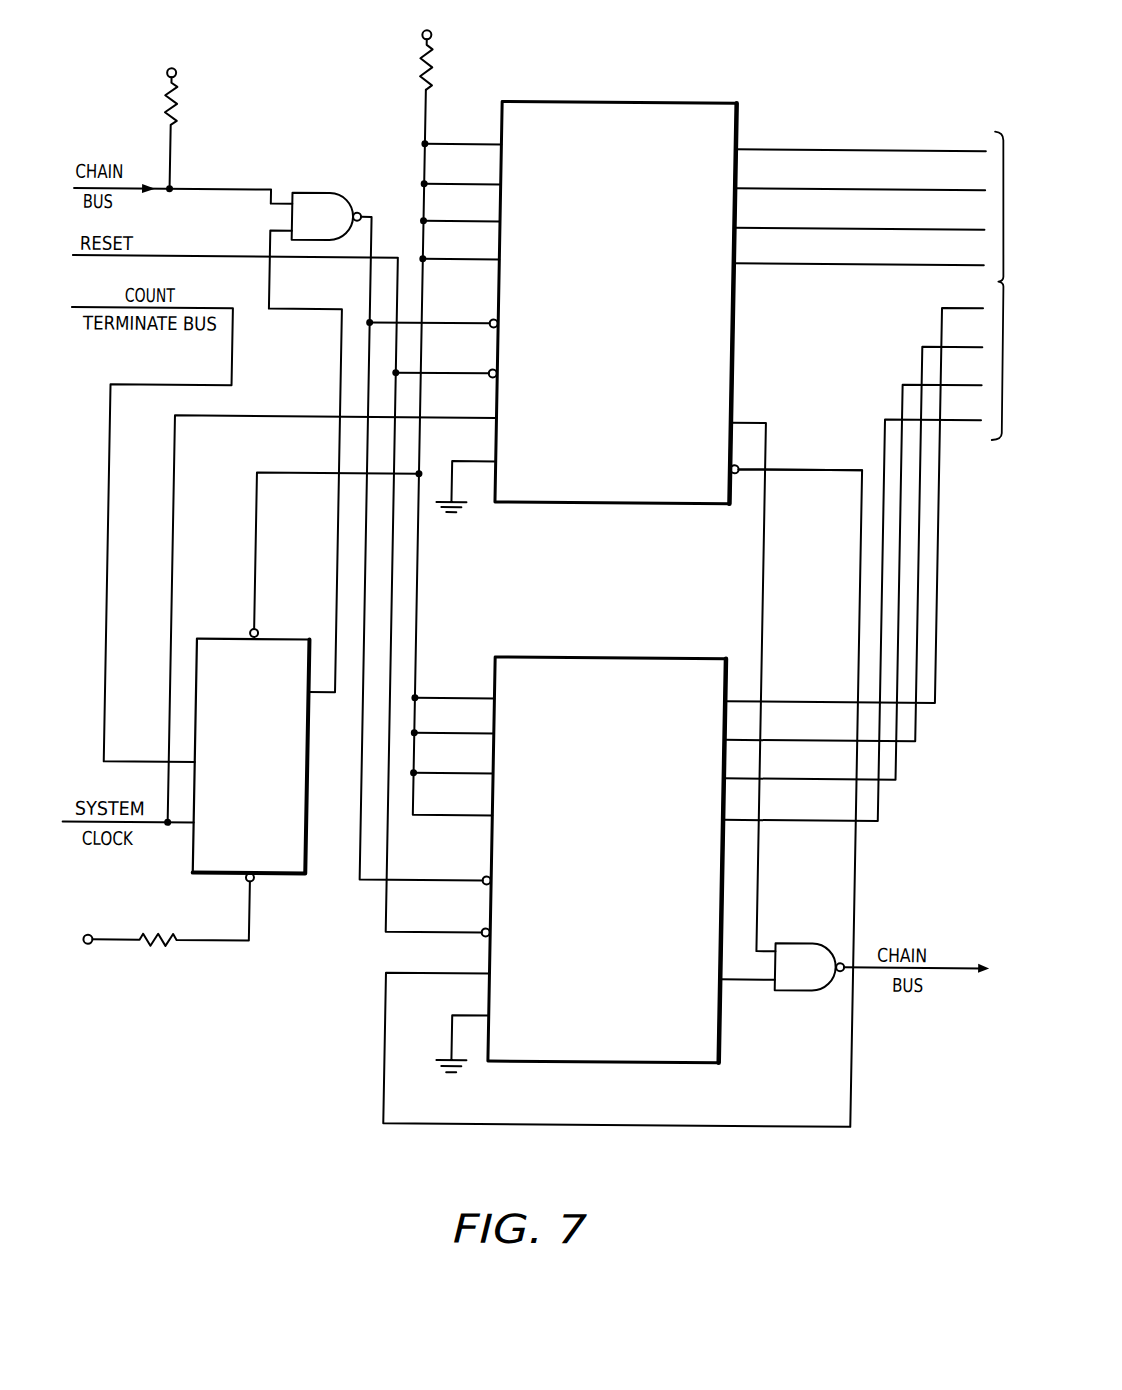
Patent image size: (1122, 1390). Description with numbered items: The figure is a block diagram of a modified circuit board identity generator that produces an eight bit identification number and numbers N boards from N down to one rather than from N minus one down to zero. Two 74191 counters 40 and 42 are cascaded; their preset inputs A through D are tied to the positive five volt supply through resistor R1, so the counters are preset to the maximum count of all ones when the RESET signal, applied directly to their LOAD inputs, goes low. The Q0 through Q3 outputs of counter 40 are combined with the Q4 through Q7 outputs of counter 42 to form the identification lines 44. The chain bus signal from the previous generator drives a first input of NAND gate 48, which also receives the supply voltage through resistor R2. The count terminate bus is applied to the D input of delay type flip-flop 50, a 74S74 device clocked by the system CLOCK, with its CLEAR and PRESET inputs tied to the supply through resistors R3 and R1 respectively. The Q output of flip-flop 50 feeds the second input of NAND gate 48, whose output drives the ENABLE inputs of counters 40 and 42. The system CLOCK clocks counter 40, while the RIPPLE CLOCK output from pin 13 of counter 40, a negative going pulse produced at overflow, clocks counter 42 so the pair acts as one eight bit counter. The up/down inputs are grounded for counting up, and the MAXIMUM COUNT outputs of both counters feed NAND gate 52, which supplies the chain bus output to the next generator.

The counter 40 is at (628, 110).
The counter 42 is at (636, 662).
The identification lines 44 is at (1005, 269).
The NAND gate 48 is at (331, 197).
The delay type flip-flop 50 is at (307, 789).
The NAND gate 52 is at (829, 931).
The pin 13 is at (797, 457).
The resistor R1 is at (411, 73).
The resistor R2 is at (156, 100).
The resistor R3 is at (174, 916).